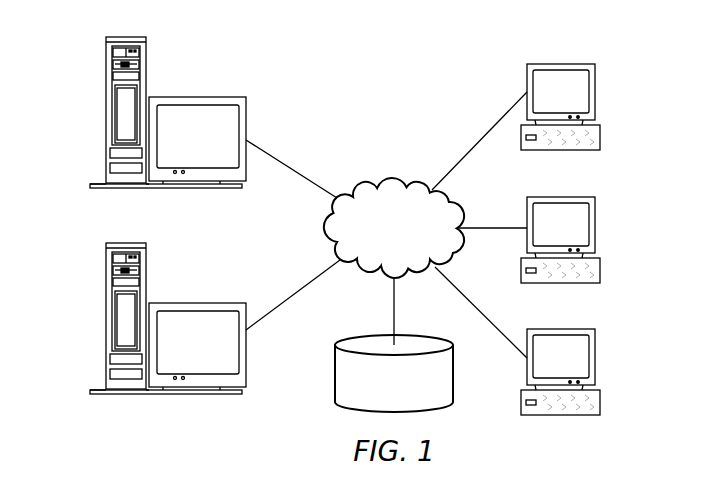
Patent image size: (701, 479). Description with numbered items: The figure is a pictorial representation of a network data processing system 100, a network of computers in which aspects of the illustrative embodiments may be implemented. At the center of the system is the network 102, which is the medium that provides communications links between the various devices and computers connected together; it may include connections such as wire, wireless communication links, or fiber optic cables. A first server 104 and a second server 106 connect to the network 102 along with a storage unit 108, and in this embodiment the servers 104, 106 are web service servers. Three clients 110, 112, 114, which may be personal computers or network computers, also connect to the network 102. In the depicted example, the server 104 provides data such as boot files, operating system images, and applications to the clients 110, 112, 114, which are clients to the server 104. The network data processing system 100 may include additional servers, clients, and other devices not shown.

The network data processing system 100 is at (440, 77).
The network 102 is at (368, 180).
The server 104 is at (107, 113).
The server 106 is at (107, 318).
The storage unit 108 is at (335, 383).
The client 110 is at (595, 93).
The client 112 is at (595, 227).
The client 114 is at (595, 358).